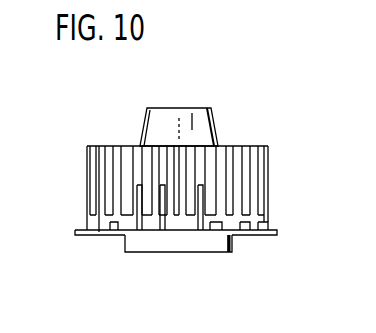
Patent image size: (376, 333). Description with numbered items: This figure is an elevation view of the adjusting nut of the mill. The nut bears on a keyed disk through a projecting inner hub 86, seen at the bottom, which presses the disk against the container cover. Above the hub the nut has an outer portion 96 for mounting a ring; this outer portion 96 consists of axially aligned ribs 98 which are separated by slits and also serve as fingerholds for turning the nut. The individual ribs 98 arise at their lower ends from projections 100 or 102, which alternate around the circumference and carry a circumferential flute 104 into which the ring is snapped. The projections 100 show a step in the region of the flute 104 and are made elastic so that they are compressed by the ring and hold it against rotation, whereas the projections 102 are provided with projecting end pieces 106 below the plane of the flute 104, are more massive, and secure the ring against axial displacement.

The projecting inner hub 86 is at (222, 252).
The outer portion 96 is at (87, 187).
The ribs 98 is at (254, 176).
The projections 100 is at (252, 233).
The projections 102 is at (262, 222).
The circumferential flute 104 is at (85, 224).
The projecting end pieces 106 is at (277, 235).